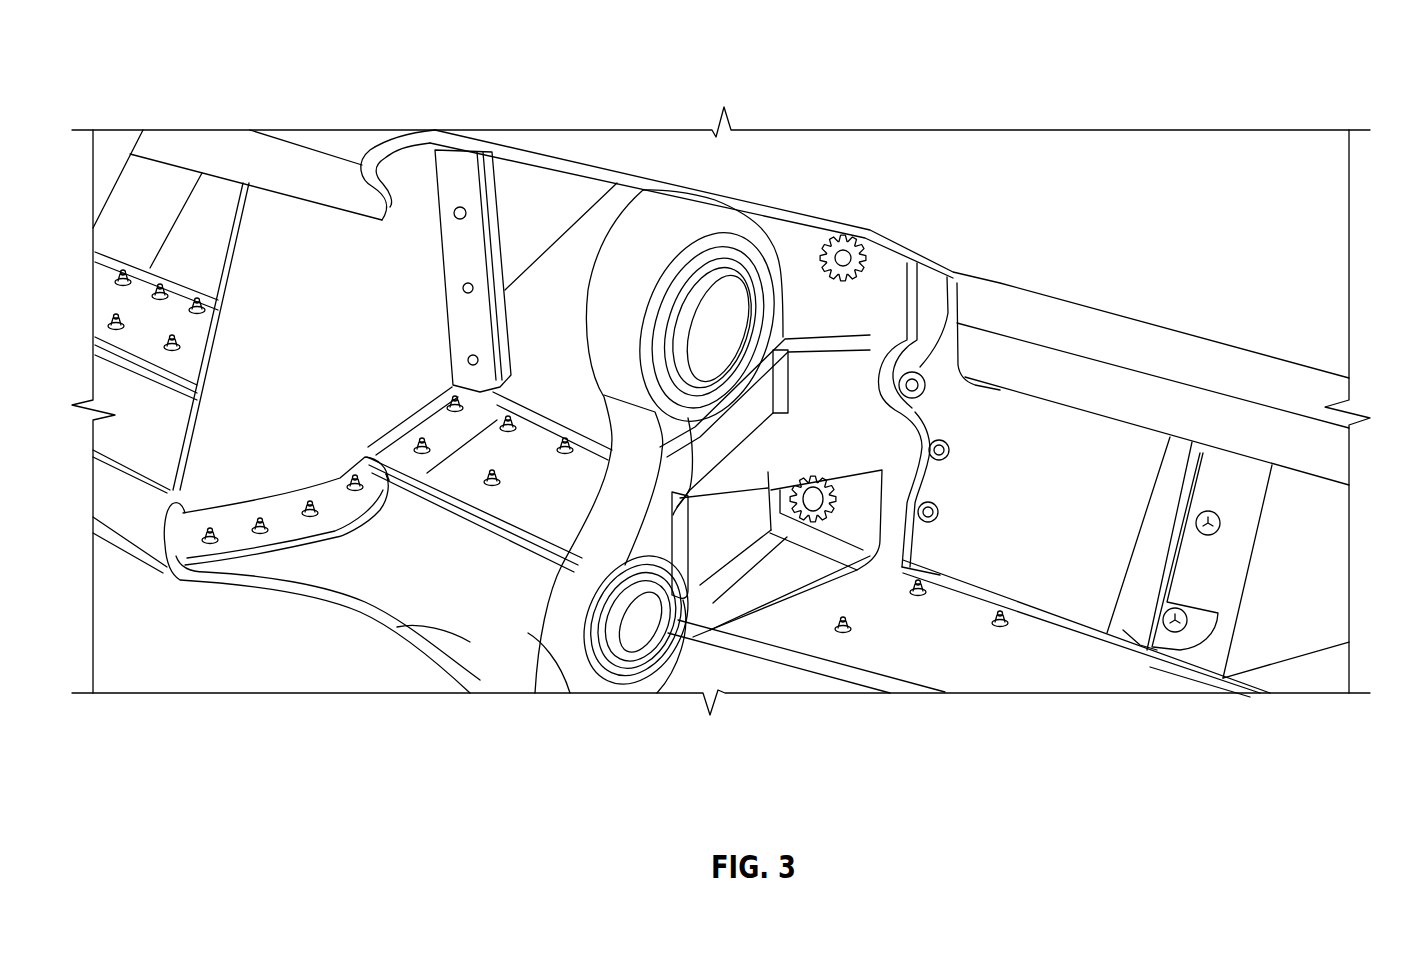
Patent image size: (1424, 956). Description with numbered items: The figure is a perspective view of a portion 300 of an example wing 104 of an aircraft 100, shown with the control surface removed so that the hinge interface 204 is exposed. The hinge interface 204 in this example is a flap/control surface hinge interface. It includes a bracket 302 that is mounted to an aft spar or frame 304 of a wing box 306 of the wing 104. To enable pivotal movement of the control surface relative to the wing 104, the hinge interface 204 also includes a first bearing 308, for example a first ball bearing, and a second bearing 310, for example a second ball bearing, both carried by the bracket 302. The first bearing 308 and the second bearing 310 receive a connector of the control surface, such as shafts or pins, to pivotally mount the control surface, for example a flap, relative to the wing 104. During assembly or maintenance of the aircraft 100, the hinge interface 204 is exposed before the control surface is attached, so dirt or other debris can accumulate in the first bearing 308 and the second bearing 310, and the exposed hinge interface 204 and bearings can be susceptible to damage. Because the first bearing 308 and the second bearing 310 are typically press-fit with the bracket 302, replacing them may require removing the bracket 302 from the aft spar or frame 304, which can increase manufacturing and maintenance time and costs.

The aircraft 100 is at (1266, 61).
The wing 104 is at (1285, 188).
The hinge interface 204 is at (840, 716).
The portion 300 is at (346, 645).
The bracket 302 is at (563, 607).
The aft spar or frame 304 is at (932, 306).
The wing box 306 is at (212, 207).
The first bearing 308 is at (774, 300).
The second bearing 310 is at (640, 655).